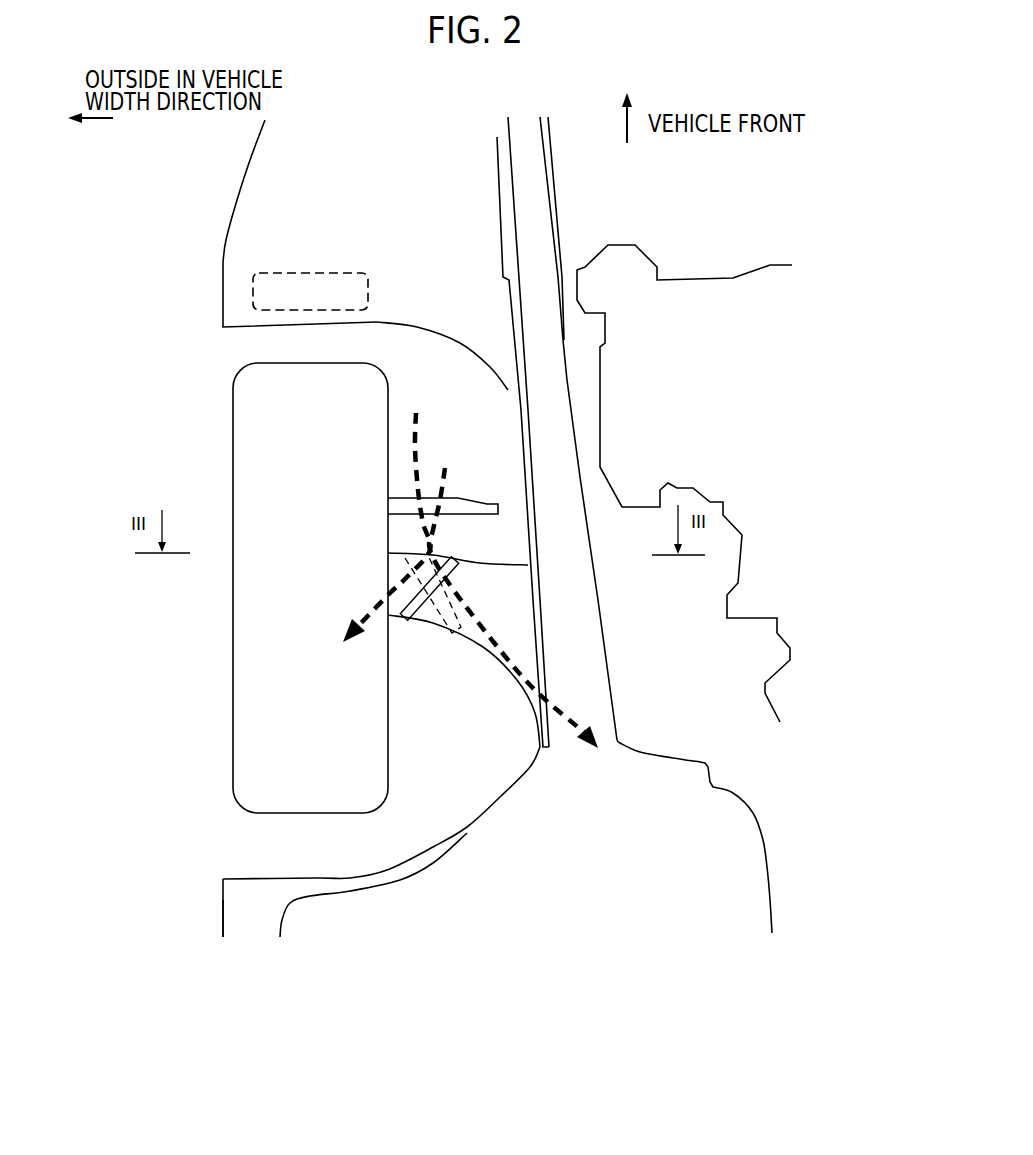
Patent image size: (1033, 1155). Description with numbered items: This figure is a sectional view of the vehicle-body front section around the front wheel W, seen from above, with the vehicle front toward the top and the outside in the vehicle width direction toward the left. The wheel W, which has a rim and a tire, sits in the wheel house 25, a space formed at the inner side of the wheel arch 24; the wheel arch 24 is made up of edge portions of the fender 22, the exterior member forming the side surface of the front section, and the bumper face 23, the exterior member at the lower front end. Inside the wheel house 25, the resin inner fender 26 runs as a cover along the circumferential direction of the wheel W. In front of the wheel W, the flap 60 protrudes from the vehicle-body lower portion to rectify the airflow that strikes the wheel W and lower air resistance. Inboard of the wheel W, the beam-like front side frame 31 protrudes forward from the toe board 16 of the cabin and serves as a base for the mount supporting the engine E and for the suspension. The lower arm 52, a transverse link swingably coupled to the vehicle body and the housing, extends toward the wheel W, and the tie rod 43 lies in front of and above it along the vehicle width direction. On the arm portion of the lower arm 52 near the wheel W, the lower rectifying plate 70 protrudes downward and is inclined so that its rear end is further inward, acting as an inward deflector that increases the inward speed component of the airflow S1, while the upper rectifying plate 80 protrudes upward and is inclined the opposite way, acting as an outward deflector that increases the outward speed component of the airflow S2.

The toe board 16 is at (463, 827).
The fender 22 is at (223, 907).
The bumper face 23 is at (223, 262).
The wheel arch 24 is at (223, 879).
The wheel house 25 is at (427, 787).
The inner fender 26 is at (377, 323).
The front side frame 31 is at (562, 401).
The tie rod 43 is at (487, 503).
The lower arm 52 is at (523, 578).
The flap 60 is at (252, 286).
The lower rectifying plate 70 is at (264, 644).
The upper rectifying plate 80 is at (403, 610).
The wheel W is at (232, 415).
The engine E is at (750, 275).
The airflow S1 is at (387, 511).
The airflow S2 is at (513, 589).